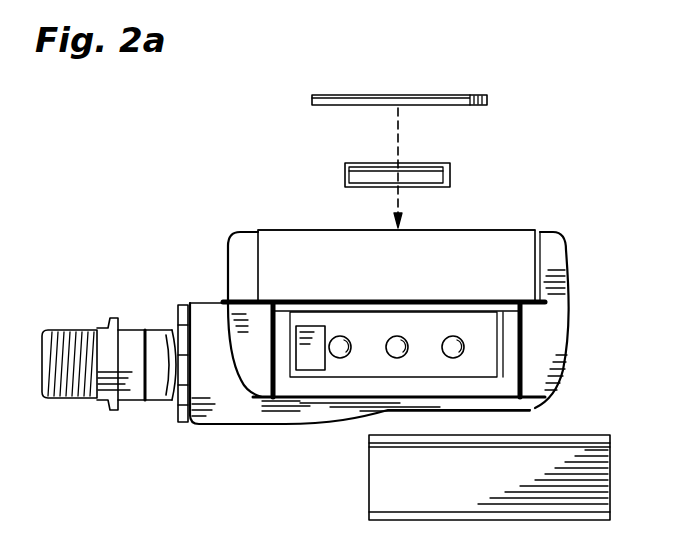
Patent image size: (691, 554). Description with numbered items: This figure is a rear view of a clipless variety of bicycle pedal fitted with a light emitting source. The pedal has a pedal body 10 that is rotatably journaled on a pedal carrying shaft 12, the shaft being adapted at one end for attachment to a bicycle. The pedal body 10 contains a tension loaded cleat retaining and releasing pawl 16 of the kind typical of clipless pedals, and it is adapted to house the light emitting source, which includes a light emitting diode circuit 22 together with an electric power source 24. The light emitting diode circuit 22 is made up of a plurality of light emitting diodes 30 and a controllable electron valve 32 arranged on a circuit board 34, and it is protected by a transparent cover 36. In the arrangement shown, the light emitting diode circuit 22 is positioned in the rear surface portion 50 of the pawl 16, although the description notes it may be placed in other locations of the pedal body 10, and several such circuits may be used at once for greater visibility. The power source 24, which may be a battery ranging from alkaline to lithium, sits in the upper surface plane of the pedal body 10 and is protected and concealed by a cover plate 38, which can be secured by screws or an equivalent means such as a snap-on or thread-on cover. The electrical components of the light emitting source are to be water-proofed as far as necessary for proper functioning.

The pedal body 10 is at (208, 312).
The pedal carrying shaft 12 is at (128, 340).
The tension loaded cleat retaining and releasing pawl 16 is at (493, 258).
The light emitting diode circuit 22 is at (480, 342).
The electric power source 24 is at (428, 173).
The light emitting diodes 30 is at (352, 357).
The controllable electron valve 32 is at (320, 372).
The circuit board 34 is at (362, 328).
The transparent cover 36 is at (527, 465).
The cover plate 38 is at (345, 106).
The rear surface portion 50 is at (431, 260).